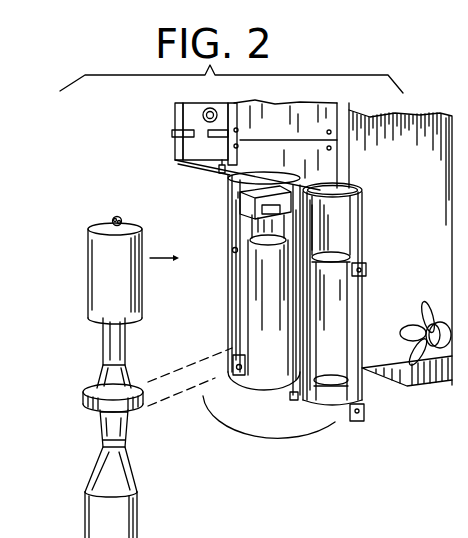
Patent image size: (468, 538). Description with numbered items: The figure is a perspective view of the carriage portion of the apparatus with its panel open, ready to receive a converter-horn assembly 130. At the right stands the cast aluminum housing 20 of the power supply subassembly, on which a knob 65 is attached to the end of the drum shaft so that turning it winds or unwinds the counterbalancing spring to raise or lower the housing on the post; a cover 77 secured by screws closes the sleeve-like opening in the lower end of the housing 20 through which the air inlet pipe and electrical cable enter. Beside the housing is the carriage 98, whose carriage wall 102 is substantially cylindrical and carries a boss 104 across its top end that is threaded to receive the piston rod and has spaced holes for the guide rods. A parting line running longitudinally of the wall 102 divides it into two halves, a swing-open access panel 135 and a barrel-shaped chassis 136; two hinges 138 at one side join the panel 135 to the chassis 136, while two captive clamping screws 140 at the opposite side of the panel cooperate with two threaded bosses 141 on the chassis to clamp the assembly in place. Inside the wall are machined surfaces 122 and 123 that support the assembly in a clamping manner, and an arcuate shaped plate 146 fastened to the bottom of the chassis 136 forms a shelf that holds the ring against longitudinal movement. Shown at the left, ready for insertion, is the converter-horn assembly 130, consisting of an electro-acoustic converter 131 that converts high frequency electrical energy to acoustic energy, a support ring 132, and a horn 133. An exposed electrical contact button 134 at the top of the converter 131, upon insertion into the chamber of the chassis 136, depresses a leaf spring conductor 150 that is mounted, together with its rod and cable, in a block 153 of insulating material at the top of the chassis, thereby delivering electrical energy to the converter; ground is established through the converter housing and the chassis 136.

The housing 20 is at (418, 170).
The knob 65 is at (424, 312).
The cover 77 is at (398, 386).
The carriage 98 is at (266, 397).
The carriage wall 102 is at (280, 296).
The boss 104 is at (258, 176).
The machined surface 122 is at (348, 264).
The machined surface 123 is at (337, 390).
The converter-horn assembly 130 is at (76, 234).
The electro-acoustic converter 131 is at (103, 270).
The support ring 132 is at (88, 393).
The horn 133 is at (95, 502).
The electrical contact button 134 is at (117, 216).
The swing-open access panel 135 is at (362, 240).
The chassis 136 is at (238, 195).
The hinge 138 is at (293, 400).
The captive clamping screw 140 is at (367, 275).
The threaded boss 141 is at (232, 253).
The arcuate shaped plate 146 is at (222, 374).
The leaf spring conductor 150 is at (262, 208).
The block 153 is at (240, 194).